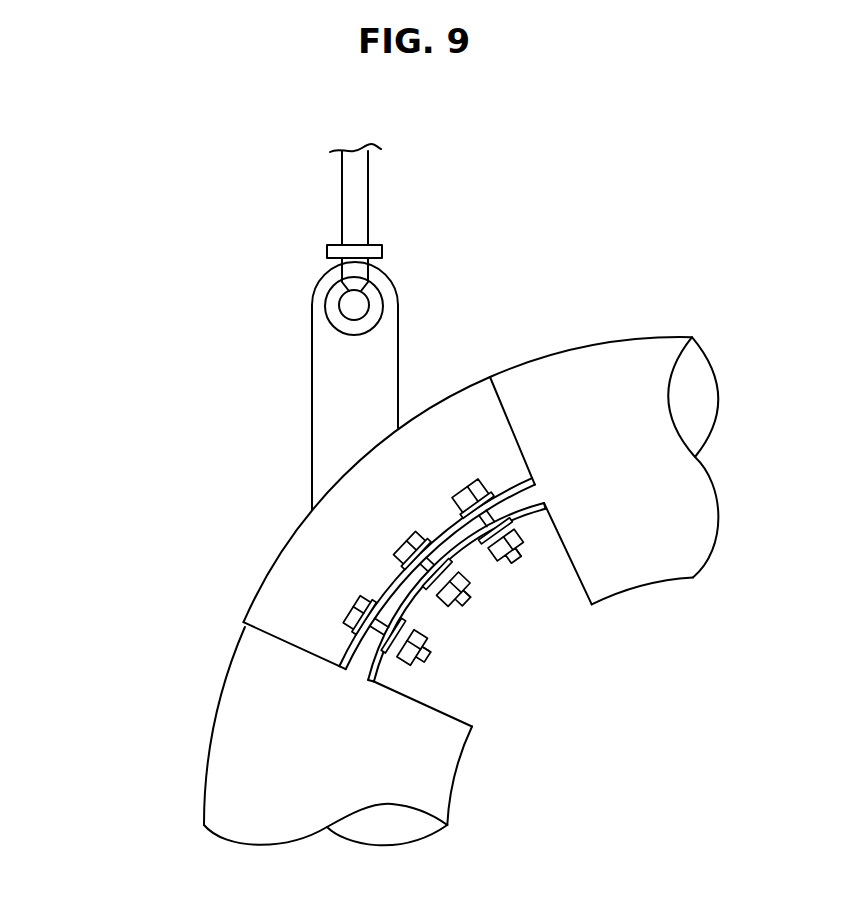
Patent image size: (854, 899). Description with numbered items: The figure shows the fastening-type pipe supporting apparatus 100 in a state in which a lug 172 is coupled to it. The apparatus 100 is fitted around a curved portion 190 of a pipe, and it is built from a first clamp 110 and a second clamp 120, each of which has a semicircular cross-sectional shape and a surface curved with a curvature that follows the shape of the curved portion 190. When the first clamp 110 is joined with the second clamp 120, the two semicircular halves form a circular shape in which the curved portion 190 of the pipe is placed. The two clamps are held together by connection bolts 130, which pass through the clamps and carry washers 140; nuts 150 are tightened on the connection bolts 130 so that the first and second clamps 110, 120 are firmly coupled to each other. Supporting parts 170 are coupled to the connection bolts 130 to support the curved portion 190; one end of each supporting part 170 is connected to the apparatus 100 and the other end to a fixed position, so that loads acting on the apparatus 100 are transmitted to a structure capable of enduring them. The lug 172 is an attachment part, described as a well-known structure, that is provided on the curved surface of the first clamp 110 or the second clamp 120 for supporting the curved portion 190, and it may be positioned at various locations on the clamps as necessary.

The fastening-type pipe supporting apparatus 100 is at (178, 368).
The first clamp 110 is at (290, 582).
The second clamp 120 is at (516, 642).
The connection bolts 130 is at (485, 478).
The washers 140 is at (500, 485).
The nuts 150 is at (517, 542).
The supporting parts 170 is at (347, 207).
The lug 172 is at (322, 377).
The curved portion 190 is at (615, 370).